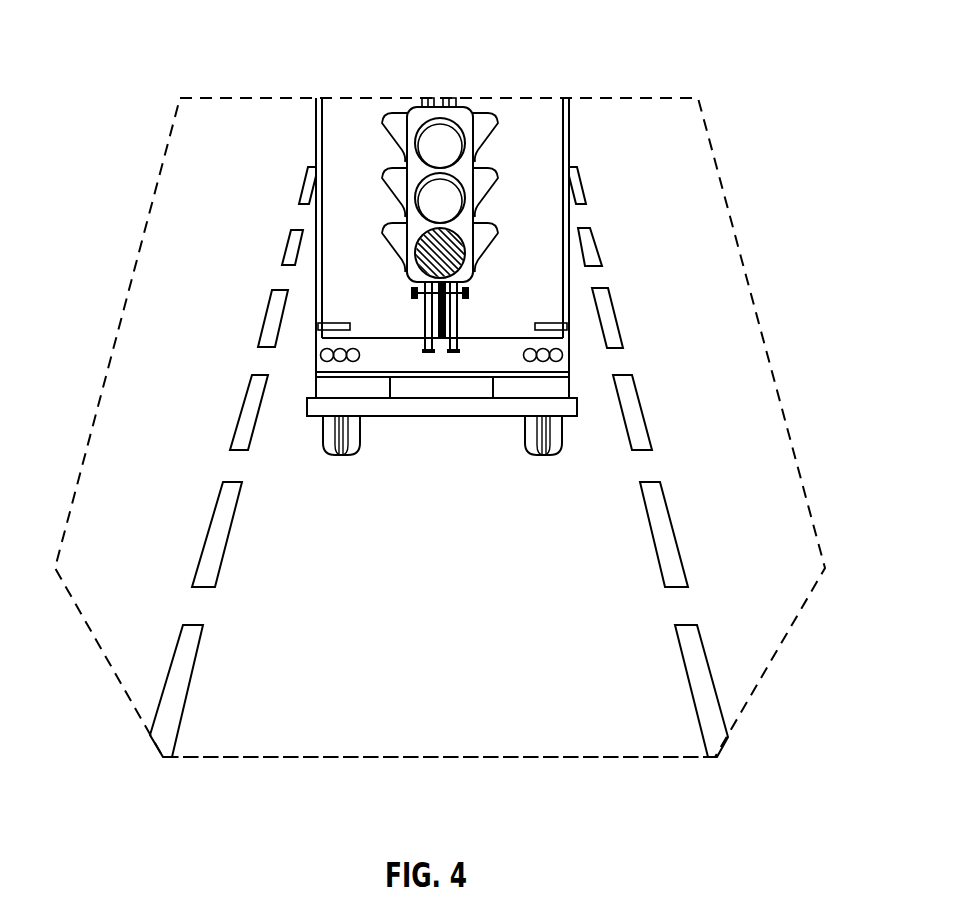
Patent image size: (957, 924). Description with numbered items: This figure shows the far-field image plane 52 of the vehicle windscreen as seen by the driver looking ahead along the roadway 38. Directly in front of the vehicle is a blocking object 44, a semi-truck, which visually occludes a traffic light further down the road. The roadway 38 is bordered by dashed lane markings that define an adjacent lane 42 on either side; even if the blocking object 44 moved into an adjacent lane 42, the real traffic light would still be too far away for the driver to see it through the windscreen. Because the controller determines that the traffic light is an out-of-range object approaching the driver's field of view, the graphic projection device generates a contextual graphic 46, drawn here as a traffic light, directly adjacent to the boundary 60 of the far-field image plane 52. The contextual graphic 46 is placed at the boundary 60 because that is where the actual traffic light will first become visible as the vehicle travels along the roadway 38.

The roadway 38 is at (457, 587).
The adjacent lane 42 is at (128, 639).
The blocking object 44 is at (340, 292).
The contextual graphic 46 is at (448, 103).
The far-field image plane 52 is at (787, 423).
The boundary 60 is at (322, 98).